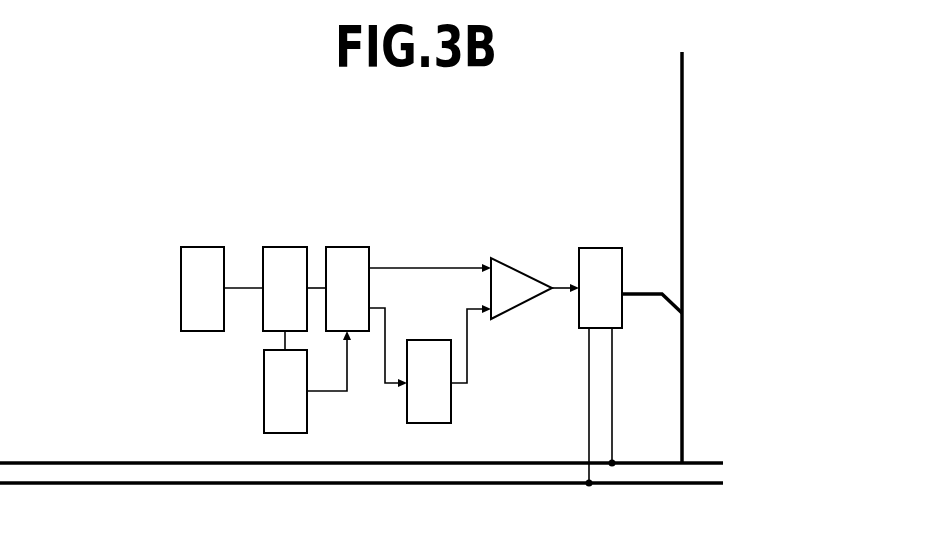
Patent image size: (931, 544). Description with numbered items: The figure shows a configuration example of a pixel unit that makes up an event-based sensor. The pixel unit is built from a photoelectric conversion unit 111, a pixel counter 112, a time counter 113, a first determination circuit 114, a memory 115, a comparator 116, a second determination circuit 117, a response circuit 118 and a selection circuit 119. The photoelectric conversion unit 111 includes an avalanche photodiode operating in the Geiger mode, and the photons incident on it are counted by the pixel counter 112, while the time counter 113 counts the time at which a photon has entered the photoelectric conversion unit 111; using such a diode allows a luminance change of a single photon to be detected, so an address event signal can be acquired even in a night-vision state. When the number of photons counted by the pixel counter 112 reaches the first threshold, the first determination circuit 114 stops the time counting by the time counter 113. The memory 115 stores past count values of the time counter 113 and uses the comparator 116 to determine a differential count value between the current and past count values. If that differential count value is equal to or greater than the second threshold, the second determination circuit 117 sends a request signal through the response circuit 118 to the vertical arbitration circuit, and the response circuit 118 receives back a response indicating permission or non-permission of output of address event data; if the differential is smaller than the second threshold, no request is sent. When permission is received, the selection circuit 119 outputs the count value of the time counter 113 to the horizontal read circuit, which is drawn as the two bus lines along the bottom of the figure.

The photoelectric conversion unit 111 is at (205, 255).
The pixel counter 112 is at (288, 254).
The time counter 113 is at (270, 391).
The first determination circuit 114 is at (350, 255).
The memory 115 is at (445, 403).
The comparator 116 is at (522, 280).
The second determination circuit 117 is at (600, 256).
The response circuit 118 is at (708, 463).
The selection circuit 119 is at (708, 486).